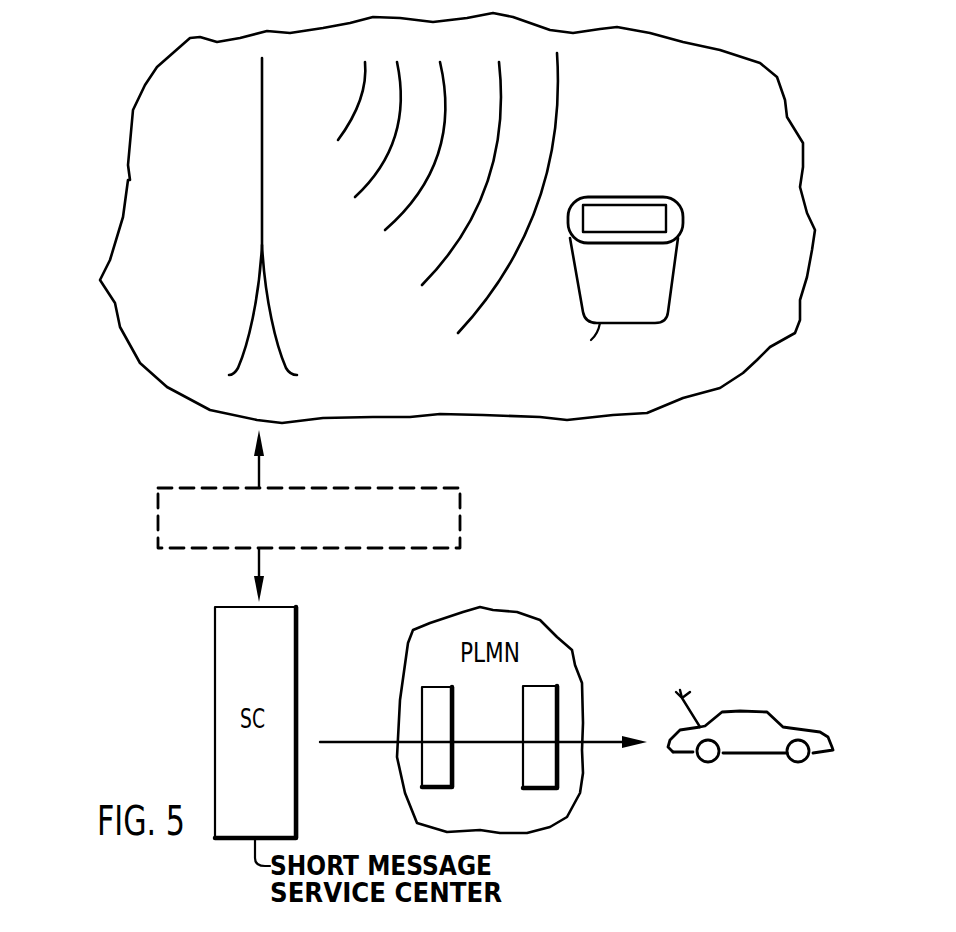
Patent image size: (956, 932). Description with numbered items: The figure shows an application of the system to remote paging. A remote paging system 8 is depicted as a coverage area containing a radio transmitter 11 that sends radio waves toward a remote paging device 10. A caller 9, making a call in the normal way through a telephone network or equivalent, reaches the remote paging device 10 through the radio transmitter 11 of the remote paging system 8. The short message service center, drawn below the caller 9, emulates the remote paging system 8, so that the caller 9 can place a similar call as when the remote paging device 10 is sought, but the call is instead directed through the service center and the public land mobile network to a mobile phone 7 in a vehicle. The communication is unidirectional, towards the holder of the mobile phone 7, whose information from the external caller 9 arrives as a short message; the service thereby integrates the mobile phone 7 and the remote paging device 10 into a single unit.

The mobile phone 7 is at (738, 712).
The remote paging system 8 is at (127, 180).
The caller 9 is at (158, 518).
The remote paging device 10 is at (667, 300).
The radio transmitter 11 is at (248, 340).